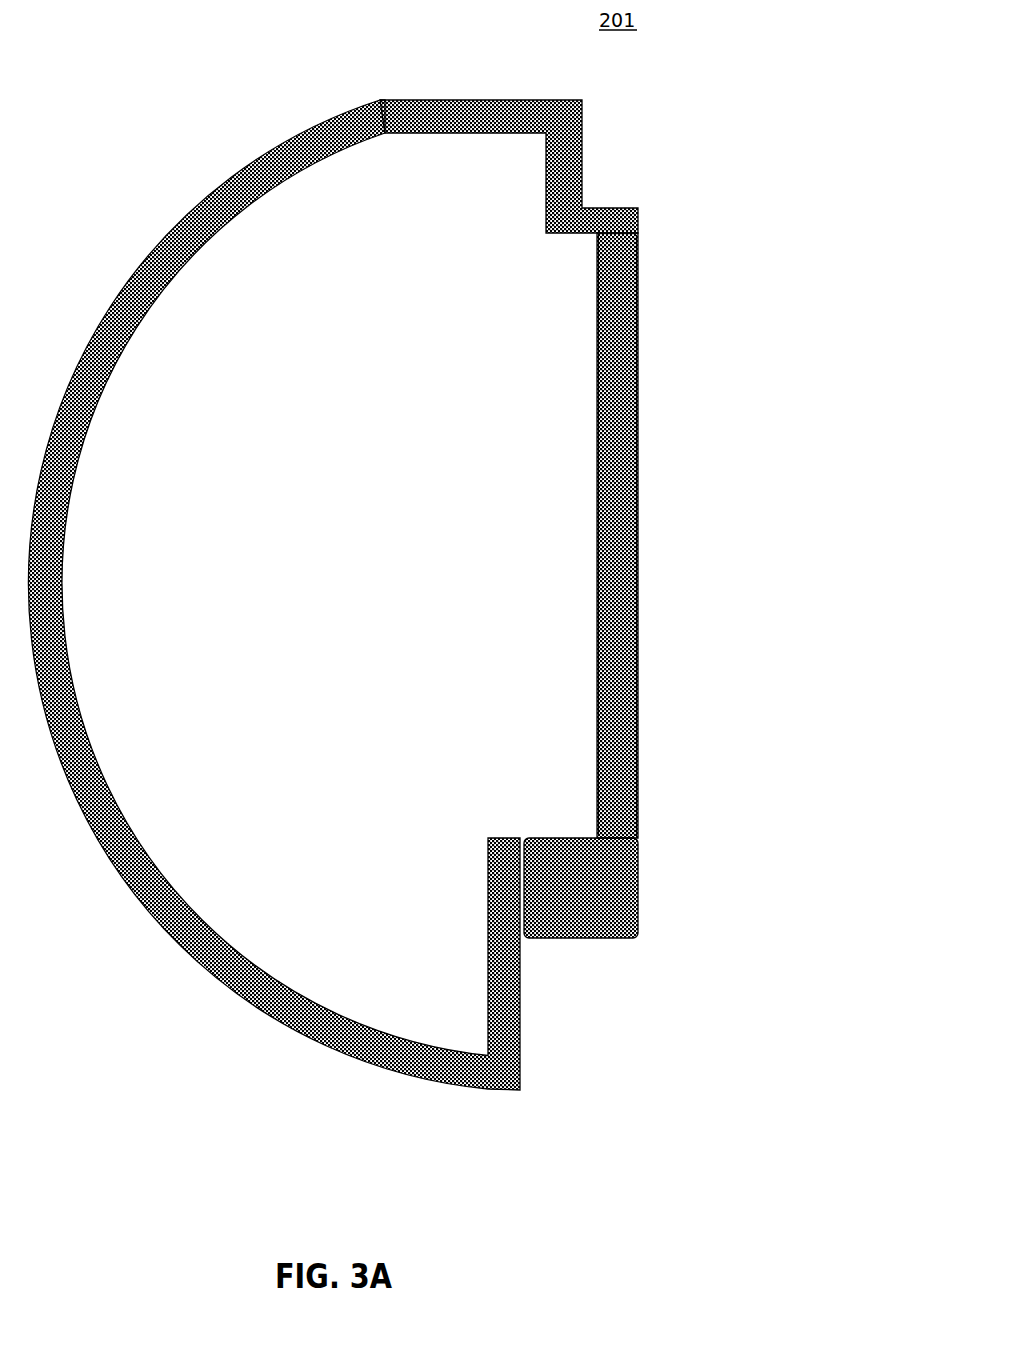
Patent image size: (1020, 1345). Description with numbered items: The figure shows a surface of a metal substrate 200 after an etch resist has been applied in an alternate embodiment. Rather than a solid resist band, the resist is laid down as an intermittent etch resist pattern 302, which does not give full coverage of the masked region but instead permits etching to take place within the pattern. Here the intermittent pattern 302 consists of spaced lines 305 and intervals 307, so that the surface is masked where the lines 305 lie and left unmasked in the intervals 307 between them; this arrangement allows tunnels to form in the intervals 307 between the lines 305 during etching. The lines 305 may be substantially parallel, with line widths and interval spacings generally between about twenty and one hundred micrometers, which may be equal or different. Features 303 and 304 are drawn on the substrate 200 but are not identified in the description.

The metal substrate 200 is at (645, 236).
The intermittent etch resist pattern 302 is at (584, 153).
The inner surface 303 is at (548, 368).
The lower block portion 304 is at (637, 890).
The spaced lines 305 is at (627, 562).
The intervals 307 is at (637, 502).